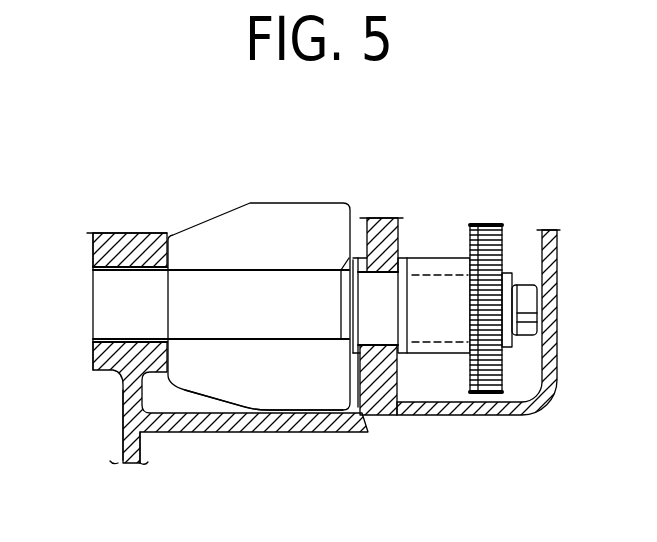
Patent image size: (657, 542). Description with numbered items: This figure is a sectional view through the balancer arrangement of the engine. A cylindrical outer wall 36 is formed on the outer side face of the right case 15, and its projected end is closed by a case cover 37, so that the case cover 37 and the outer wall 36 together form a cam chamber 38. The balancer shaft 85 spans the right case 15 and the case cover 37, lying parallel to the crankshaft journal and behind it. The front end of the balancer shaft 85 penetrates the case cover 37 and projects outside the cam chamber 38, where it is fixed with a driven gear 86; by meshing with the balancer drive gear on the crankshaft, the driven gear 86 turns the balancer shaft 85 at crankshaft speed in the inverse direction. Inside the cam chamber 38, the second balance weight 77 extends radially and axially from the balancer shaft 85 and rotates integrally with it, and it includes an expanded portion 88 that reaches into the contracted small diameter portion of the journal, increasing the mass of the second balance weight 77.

The right case 15 is at (128, 250).
The balancer shaft 85 is at (110, 307).
The expanded portion 88 is at (292, 207).
The case cover 37 is at (383, 218).
The outer wall 36 is at (250, 414).
The cam chamber 38 is at (172, 403).
The second balance weight 77 is at (310, 377).
The driven gear 86 is at (503, 365).